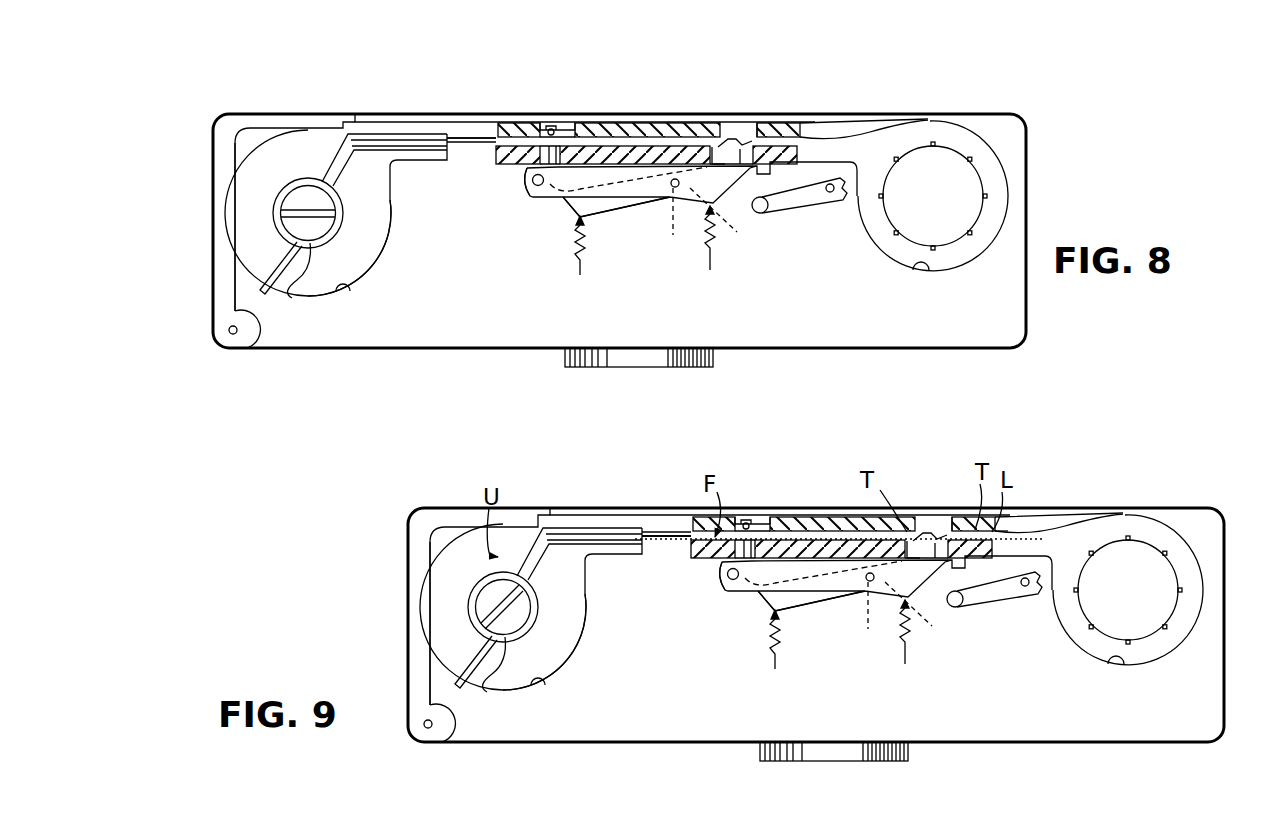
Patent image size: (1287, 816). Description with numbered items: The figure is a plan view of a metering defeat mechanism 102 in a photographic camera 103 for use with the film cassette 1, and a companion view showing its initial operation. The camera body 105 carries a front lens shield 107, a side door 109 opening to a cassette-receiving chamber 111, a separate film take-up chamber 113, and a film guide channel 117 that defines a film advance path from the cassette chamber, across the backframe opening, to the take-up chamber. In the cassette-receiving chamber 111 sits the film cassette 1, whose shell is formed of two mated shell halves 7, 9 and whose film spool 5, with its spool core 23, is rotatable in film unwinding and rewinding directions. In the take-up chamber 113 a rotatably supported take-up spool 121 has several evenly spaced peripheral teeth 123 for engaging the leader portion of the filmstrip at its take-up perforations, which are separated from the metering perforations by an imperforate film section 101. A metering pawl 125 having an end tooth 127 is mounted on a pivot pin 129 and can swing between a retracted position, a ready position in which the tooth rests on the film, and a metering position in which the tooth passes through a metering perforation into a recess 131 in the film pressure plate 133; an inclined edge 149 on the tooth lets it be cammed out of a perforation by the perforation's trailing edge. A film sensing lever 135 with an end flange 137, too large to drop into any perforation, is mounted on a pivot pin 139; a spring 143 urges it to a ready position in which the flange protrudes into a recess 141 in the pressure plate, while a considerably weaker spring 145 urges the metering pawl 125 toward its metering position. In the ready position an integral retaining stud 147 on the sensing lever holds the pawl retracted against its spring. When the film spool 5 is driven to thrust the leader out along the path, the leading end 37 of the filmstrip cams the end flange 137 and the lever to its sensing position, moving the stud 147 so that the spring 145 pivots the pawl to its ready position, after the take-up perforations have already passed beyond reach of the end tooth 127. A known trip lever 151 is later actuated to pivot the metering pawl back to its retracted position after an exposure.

In FIG. 8, the film cassette 1 is at (206, 236).
In FIG. 9, the film cassette 1 is at (346, 623).
In FIG. 8, the film spool 5 is at (362, 213).
In FIG. 9, the film spool 5 is at (555, 599).
In FIG. 8, the shell half 7 is at (232, 205).
In FIG. 9, the shell half 7 is at (453, 607).
In FIG. 8, the shell half 9 is at (357, 248).
In FIG. 9, the shell half 9 is at (556, 652).
In FIG. 8, the spool core 23 is at (300, 272).
In FIG. 9, the spool core 23 is at (483, 683).
In FIG. 9, the leading end 37 is at (1023, 502).
In FIG. 9, the imperforate film section 101 is at (672, 507).
In FIG. 8, the metering defeat mechanism 102 is at (522, 184).
In FIG. 9, the metering defeat mechanism 102 is at (702, 617).
In FIG. 8, the photographic camera 103 is at (302, 98).
In FIG. 9, the photographic camera 103 is at (774, 590).
In FIG. 8, the camera body 105 is at (420, 100).
In FIG. 9, the camera body 105 is at (773, 479).
In FIG. 8, the front lens shield 107 is at (712, 370).
In FIG. 9, the front lens shield 107 is at (869, 766).
In FIG. 8, the side door 109 is at (224, 280).
In FIG. 9, the side door 109 is at (471, 628).
In FIG. 8, the cassette-receiving chamber 111 is at (346, 291).
In FIG. 9, the cassette-receiving chamber 111 is at (555, 704).
In FIG. 8, the film take-up chamber 113 is at (927, 269).
In FIG. 9, the film take-up chamber 113 is at (1128, 686).
In FIG. 8, the film guide channel 117 is at (470, 138).
In FIG. 9, the film guide channel 117 is at (879, 493).
In FIG. 8, the take-up spool 121 is at (960, 205).
In FIG. 9, the take-up spool 121 is at (1175, 590).
In FIG. 8, the peripheral teeth 123 is at (930, 120).
In FIG. 9, the peripheral teeth 123 is at (1128, 562).
In FIG. 8, the metering pawl 125 is at (598, 205).
In FIG. 9, the metering pawl 125 is at (811, 622).
In FIG. 8, the end tooth 127 is at (560, 150).
In FIG. 9, the end tooth 127 is at (841, 518).
In FIG. 8, the pivot pin 129 is at (676, 188).
In FIG. 9, the pivot pin 129 is at (857, 609).
In FIG. 8, the recess 131 is at (553, 126).
In FIG. 9, the recess 131 is at (757, 504).
In FIG. 8, the film pressure plate 133 is at (645, 121).
In FIG. 9, the film pressure plate 133 is at (844, 485).
In FIG. 8, the film sensing lever 135 is at (637, 183).
In FIG. 9, the film sensing lever 135 is at (886, 614).
In FIG. 8, the end flange 137 is at (740, 128).
In FIG. 9, the end flange 137 is at (958, 557).
In FIG. 8, the pivot pin 139 is at (533, 195).
In FIG. 9, the pivot pin 139 is at (697, 602).
In FIG. 8, the recess 141 is at (762, 130).
In FIG. 9, the recess 141 is at (937, 490).
In FIG. 8, the spring 143 is at (718, 240).
In FIG. 9, the spring 143 is at (926, 646).
In FIG. 8, the spring 145 is at (577, 250).
In FIG. 9, the spring 145 is at (752, 657).
In FIG. 8, the retaining stud 147 is at (724, 208).
In FIG. 9, the retaining stud 147 is at (924, 612).
In FIG. 8, the inclined edge 149 is at (532, 165).
In FIG. 9, the inclined edge 149 is at (703, 565).
In FIG. 8, the trip lever 151 is at (825, 205).
In FIG. 9, the trip lever 151 is at (994, 622).